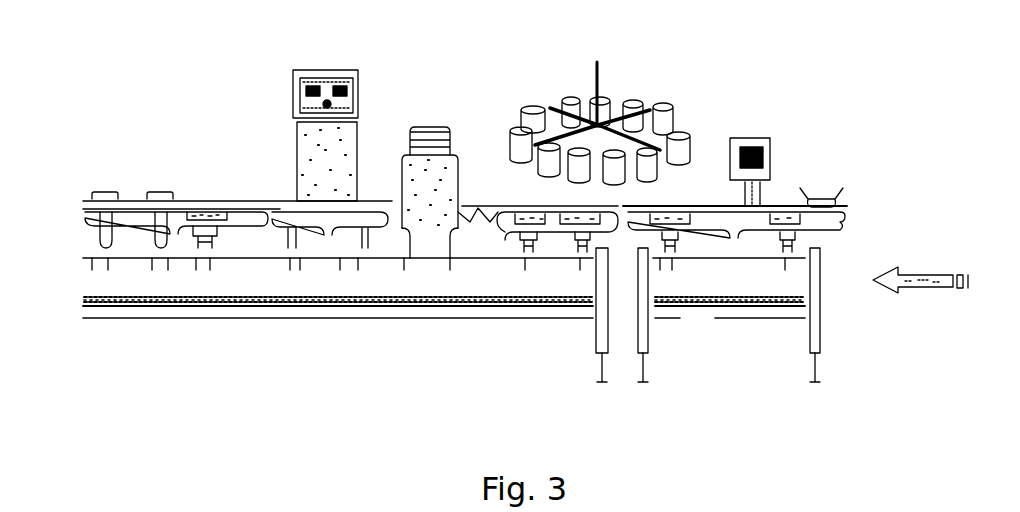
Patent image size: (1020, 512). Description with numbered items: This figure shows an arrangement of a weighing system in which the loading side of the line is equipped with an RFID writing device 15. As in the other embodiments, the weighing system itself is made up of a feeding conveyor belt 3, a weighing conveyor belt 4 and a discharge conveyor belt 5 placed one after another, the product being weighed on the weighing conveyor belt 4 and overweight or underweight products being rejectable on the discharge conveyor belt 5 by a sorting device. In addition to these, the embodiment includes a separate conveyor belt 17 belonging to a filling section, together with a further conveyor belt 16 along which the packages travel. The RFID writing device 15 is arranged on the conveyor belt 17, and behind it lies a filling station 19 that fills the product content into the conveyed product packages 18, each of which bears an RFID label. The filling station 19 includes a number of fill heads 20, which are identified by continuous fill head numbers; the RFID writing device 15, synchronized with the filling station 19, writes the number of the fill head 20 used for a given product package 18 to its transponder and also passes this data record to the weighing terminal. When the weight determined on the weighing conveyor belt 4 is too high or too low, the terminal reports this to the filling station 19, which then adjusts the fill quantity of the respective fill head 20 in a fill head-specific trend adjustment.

The feeding conveyor belt 3 is at (505, 232).
The weighing conveyor belt 4 is at (332, 227).
The discharge conveyor belt 5 is at (178, 226).
The RFID writing device 15 is at (767, 150).
The conveyor belt 16 is at (847, 205).
The conveyor belt 17 is at (738, 230).
The product package 18 is at (852, 188).
The filling station 19 is at (548, 107).
The fill head 20 is at (686, 168).